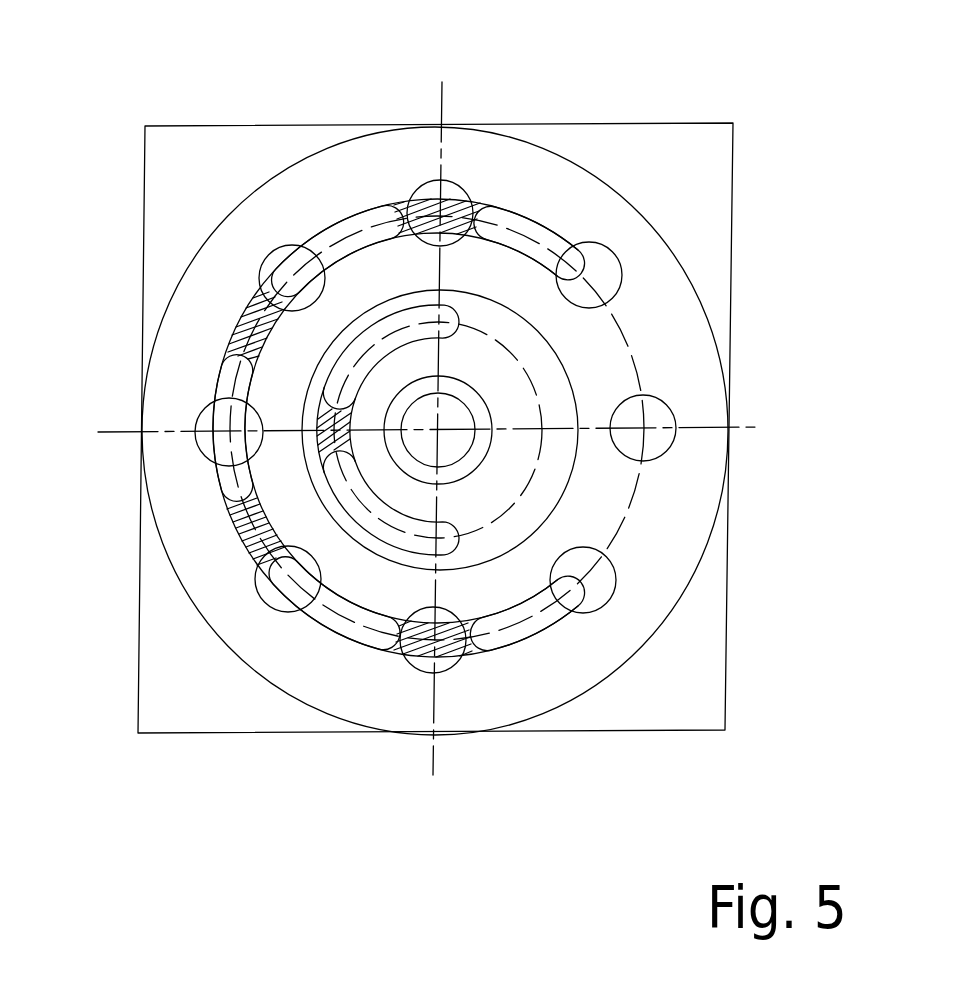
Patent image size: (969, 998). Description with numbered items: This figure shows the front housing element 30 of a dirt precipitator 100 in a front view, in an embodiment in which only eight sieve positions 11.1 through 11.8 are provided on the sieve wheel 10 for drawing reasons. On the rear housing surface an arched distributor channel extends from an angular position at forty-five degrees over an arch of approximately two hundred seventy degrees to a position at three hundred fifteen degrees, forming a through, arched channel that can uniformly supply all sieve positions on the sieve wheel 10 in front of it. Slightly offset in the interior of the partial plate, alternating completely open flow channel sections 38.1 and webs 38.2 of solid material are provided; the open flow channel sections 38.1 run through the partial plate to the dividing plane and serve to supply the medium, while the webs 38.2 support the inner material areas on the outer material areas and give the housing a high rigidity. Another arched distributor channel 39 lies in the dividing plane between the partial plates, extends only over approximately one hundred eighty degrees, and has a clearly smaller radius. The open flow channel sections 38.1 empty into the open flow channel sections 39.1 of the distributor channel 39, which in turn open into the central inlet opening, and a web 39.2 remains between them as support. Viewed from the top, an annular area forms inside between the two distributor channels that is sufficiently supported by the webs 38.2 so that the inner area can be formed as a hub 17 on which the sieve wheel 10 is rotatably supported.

The dirt precipitator 100 is at (112, 92).
The front housing element 30 is at (733, 145).
The sieve wheel 10 is at (685, 257).
The hub 17 is at (567, 367).
The sieve position 11.1 is at (603, 240).
The sieve position 11.8 is at (428, 180).
The open flow channel section 38.1 is at (342, 227).
The web 38.2 is at (403, 205).
The arched distributor channel 39 is at (347, 513).
The open flow channel section 39.1 is at (352, 355).
The web 39.2 is at (322, 418).